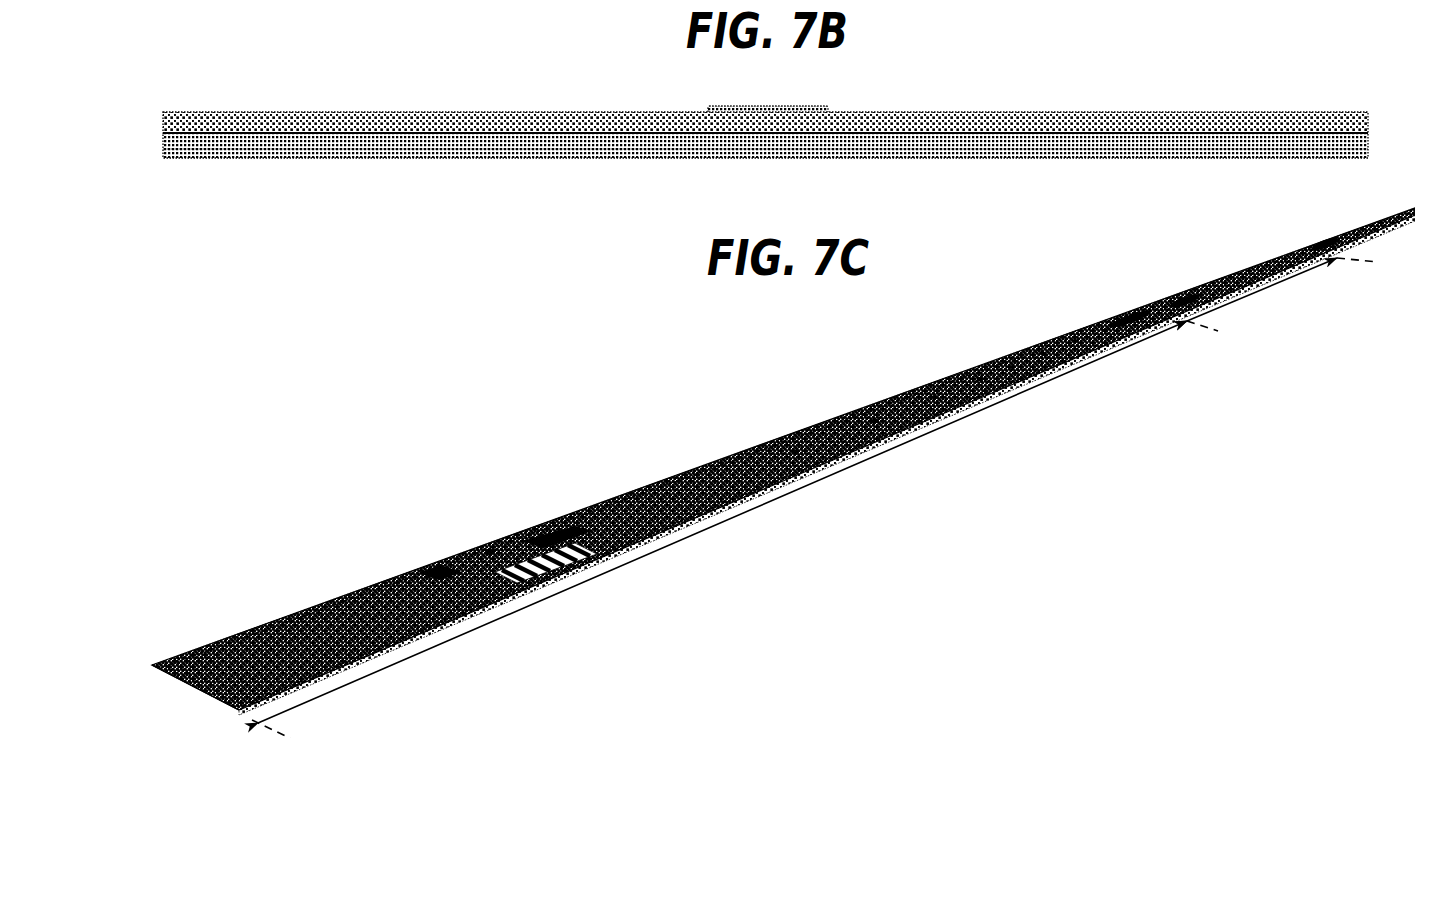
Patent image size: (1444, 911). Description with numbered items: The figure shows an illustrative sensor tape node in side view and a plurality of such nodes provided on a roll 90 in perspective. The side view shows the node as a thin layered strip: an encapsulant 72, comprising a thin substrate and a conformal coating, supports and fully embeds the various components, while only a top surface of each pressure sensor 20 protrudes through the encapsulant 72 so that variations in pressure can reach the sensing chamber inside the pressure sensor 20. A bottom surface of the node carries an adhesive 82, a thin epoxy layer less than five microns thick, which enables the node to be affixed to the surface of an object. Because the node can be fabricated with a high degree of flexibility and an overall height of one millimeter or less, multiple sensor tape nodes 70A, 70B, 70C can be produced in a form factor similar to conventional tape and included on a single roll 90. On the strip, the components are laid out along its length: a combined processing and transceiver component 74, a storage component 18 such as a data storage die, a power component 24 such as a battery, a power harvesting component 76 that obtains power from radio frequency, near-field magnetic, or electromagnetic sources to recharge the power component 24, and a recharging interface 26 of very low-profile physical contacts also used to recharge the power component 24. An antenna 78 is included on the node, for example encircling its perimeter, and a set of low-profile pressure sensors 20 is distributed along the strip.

In FIG. 7C, the storage component 18 is at (556, 528).
In FIG. 7B, the pressure sensor 20 is at (780, 107).
In FIG. 7C, the pressure sensor 20 is at (783, 461).
In FIG. 7C, the power component 24 is at (245, 647).
In FIG. 7C, the recharging interface 26 is at (568, 583).
In FIG. 7C, the sensor tape node 70A is at (735, 527).
In FIG. 7C, the sensor tape node 70B is at (1270, 286).
In FIG. 7C, the sensor tape node 70C is at (1340, 230).
In FIG. 7B, the encapsulant 72 is at (456, 122).
In FIG. 7C, the combined processing and transceiver component 74 is at (440, 567).
In FIG. 7C, the power harvesting component 76 is at (490, 550).
In FIG. 7C, the antenna 78 is at (748, 447).
In FIG. 7B, the adhesive 82 is at (526, 160).
In FIG. 7C, the roll 90 is at (345, 347).